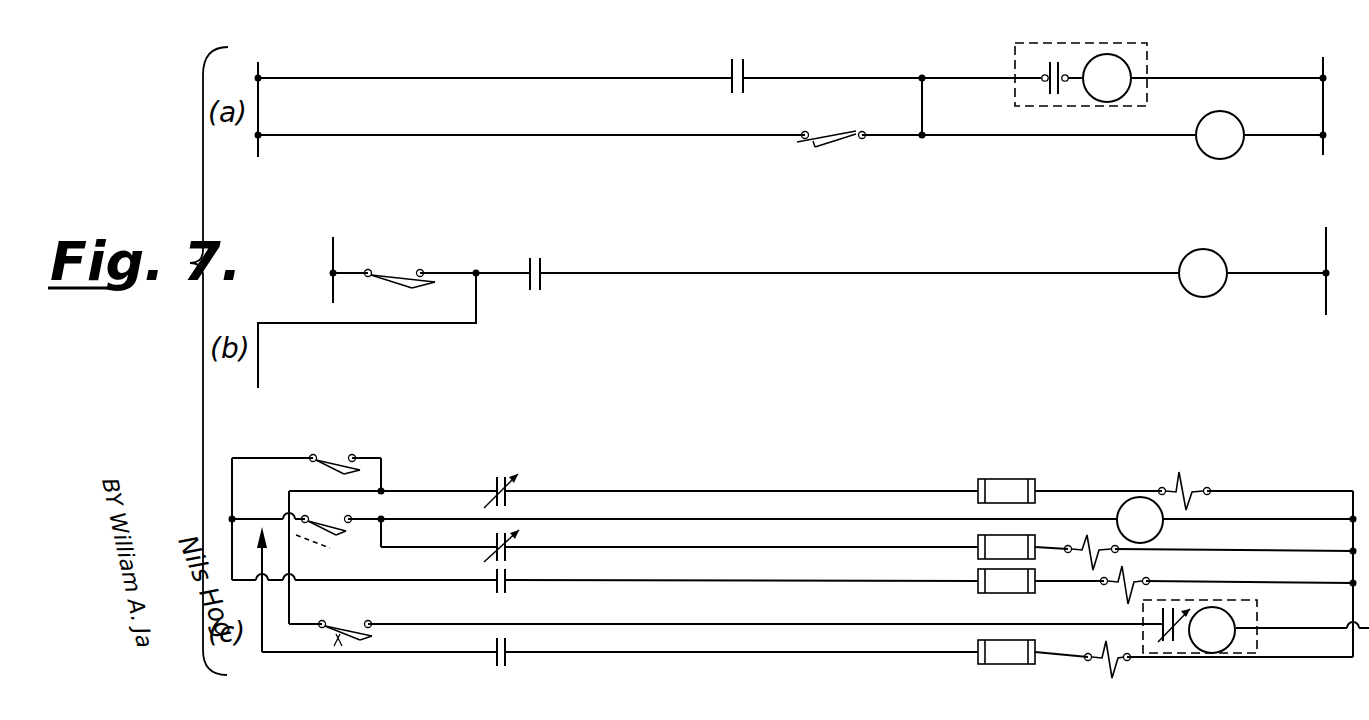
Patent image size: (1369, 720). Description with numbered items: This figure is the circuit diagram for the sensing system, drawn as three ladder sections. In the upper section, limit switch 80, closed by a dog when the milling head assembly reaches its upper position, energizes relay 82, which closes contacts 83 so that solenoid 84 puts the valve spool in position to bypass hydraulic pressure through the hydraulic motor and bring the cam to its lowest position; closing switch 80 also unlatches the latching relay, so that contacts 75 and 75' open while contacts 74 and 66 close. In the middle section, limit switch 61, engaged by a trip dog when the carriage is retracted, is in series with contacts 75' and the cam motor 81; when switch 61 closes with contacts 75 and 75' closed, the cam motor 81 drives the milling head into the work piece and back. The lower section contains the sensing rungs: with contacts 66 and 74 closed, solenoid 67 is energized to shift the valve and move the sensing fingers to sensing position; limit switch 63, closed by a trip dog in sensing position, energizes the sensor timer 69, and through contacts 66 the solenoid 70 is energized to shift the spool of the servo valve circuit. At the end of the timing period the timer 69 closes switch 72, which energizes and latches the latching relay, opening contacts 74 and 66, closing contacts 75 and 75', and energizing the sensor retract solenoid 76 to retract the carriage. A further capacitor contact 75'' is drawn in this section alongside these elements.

The limit switch 80 is at (832, 143).
The relay 82 is at (1237, 116).
The limit switch 61 is at (398, 270).
The contacts 75' is at (569, 260).
The cam motor 81 is at (1214, 254).
The contacts 75 is at (335, 442).
The contacts 74 is at (508, 472).
The limit switch 63 is at (342, 535).
The contacts 66 is at (508, 553).
The capacitor 75'' is at (533, 596).
The switch 72 is at (340, 606).
The contacts 83 is at (500, 667).
The solenoid 67 is at (1184, 476).
The sensor timer 69 is at (1165, 528).
The solenoid 70 is at (1088, 564).
The sensor retract solenoid 76 is at (1120, 591).
The solenoid 84 is at (1112, 680).